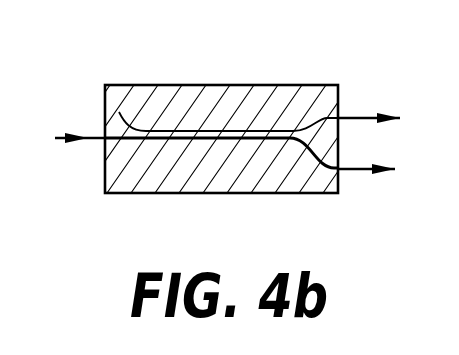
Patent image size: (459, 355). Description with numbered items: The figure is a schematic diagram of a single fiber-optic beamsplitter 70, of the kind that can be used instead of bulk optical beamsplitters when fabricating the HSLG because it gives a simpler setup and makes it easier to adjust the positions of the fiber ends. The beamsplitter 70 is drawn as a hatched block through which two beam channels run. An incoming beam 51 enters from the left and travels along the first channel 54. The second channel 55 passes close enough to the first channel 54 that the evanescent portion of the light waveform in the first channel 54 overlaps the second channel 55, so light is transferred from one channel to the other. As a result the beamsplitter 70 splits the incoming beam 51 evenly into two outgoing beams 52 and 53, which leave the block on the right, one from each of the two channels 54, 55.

The fiber-optic beamsplitter 70 is at (154, 82).
The second beam channel 55 is at (247, 128).
The first beam channel 54 is at (190, 142).
The incoming beam 51 is at (58, 143).
The outgoing beam 53 is at (388, 108).
The outgoing beam 52 is at (380, 178).